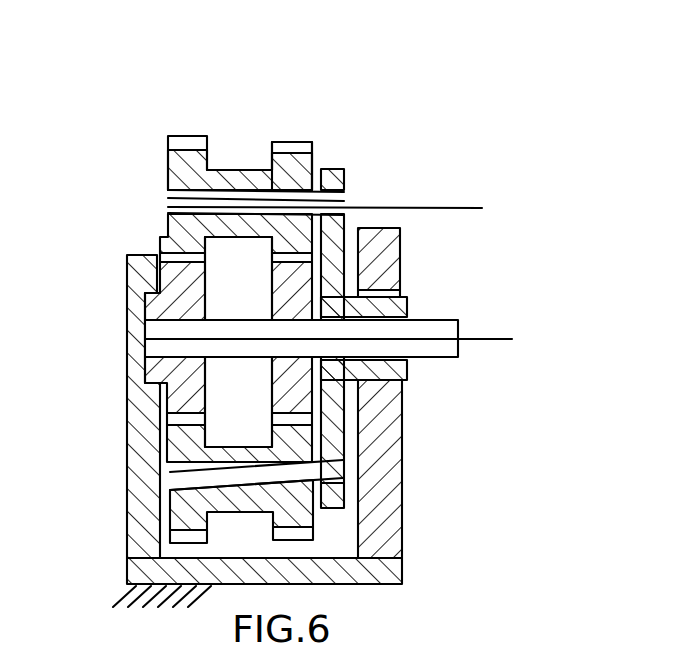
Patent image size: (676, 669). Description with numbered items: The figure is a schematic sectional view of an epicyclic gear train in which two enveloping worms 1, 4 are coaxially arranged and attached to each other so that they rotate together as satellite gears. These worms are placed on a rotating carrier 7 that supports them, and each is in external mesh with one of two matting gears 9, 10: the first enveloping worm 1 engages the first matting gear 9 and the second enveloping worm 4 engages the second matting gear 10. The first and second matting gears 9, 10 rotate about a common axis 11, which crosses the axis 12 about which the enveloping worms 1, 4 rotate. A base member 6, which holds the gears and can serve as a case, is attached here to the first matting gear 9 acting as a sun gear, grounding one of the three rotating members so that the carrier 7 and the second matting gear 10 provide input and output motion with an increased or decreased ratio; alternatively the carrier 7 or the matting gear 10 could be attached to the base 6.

The enveloping worm 1 is at (183, 145).
The enveloping worm 4 is at (275, 143).
The base member 6 is at (153, 452).
The carrier 7 is at (325, 170).
The matting gear 9 is at (183, 293).
The matting gear 10 is at (293, 393).
The axis 11 is at (487, 337).
The axis 12 is at (417, 210).